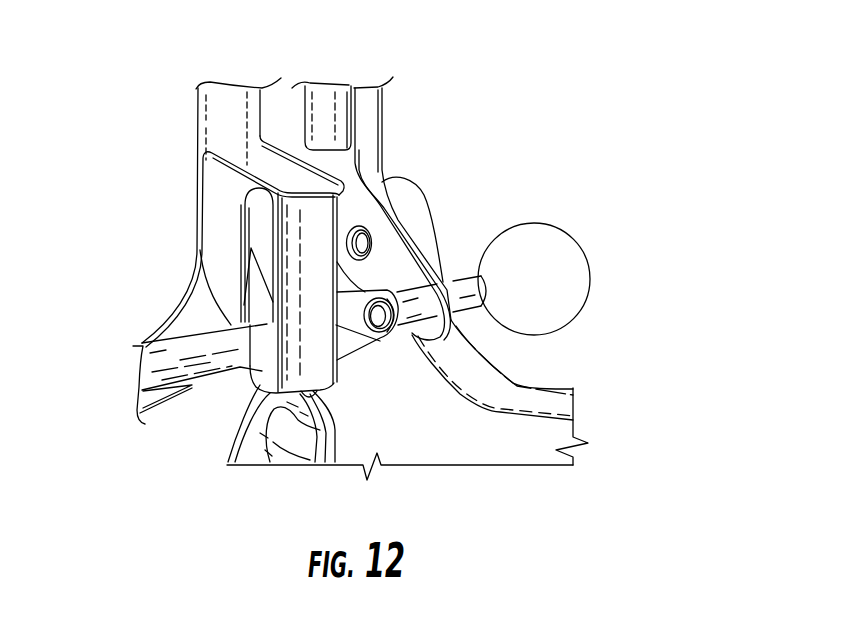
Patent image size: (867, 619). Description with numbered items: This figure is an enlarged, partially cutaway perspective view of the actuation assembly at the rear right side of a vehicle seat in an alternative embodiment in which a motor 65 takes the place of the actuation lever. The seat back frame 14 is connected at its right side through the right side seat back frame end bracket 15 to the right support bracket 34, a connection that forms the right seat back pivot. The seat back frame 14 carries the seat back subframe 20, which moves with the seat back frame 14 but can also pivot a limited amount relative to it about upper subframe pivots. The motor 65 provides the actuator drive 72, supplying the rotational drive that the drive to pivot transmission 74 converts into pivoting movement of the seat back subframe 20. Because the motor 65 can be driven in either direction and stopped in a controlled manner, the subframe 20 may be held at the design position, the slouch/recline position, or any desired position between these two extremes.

The seat back subframe 20 is at (232, 118).
The seat back frame 14 is at (320, 100).
The right side seat back frame end bracket 15 is at (403, 217).
The actuator drive 72 is at (522, 179).
The motor 65 is at (572, 235).
The drive to pivot transmission 74 is at (158, 178).
The right support bracket 34 is at (423, 442).